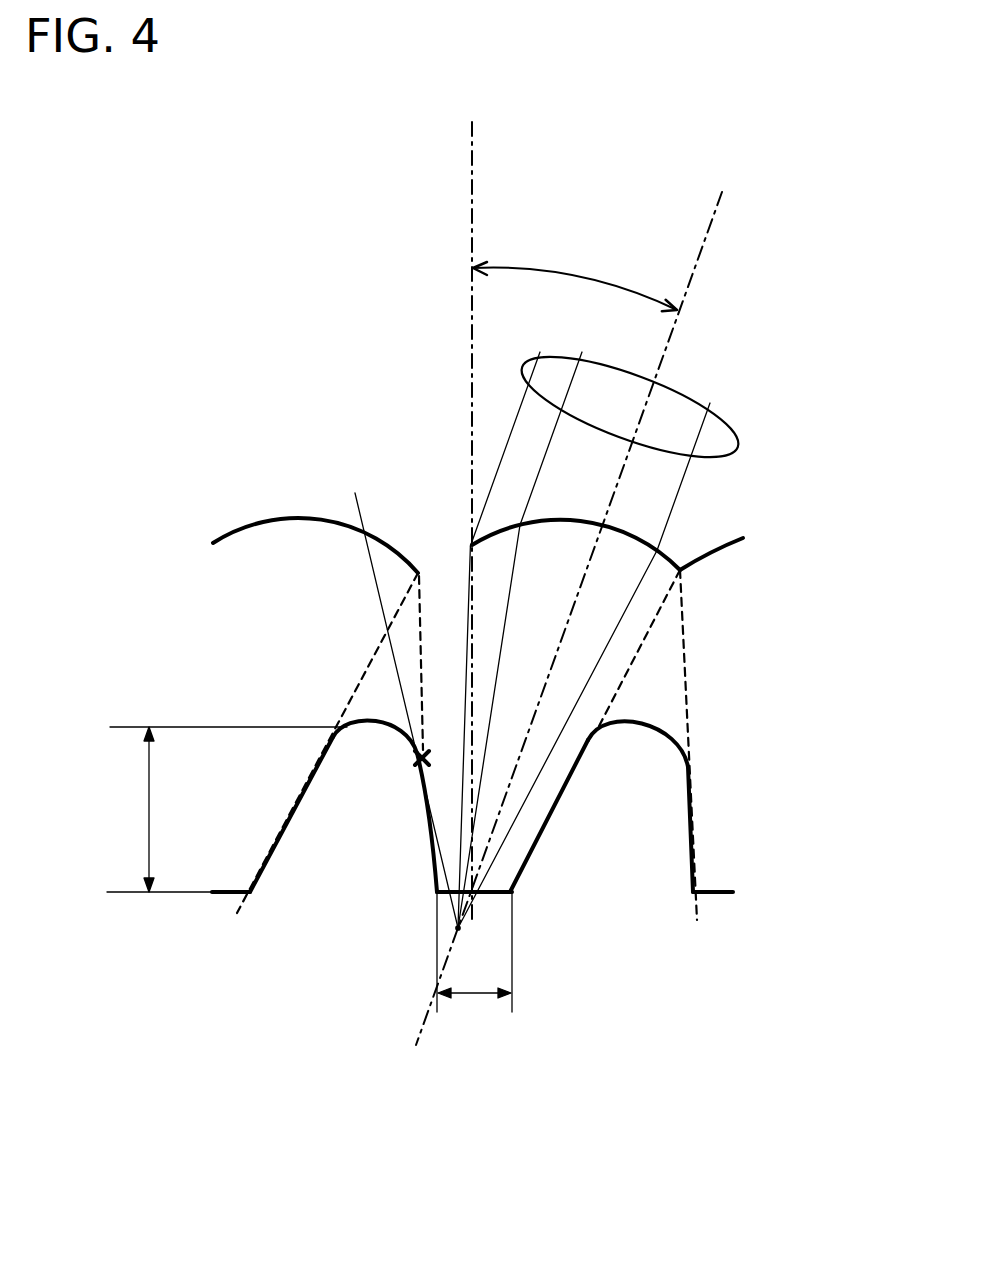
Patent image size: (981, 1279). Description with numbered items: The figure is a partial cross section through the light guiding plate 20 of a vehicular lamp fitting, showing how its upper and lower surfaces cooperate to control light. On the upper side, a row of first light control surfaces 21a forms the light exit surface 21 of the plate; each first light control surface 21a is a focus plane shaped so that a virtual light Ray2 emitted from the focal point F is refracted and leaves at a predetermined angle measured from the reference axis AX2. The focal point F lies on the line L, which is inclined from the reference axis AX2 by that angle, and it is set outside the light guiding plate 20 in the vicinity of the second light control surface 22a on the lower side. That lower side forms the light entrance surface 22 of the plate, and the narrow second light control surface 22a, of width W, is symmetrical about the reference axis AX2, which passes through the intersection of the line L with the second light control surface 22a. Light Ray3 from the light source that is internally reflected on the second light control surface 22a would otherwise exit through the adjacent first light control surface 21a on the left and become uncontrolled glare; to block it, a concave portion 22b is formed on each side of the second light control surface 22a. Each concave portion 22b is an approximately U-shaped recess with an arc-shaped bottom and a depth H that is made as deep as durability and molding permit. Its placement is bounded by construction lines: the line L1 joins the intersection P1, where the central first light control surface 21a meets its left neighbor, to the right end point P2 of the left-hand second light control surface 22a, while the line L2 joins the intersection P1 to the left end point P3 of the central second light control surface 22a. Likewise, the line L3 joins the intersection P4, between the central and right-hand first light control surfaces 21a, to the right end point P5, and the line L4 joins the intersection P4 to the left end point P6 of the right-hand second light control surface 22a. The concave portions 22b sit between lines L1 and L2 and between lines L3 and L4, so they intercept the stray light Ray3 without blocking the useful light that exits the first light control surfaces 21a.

The light guiding plate 20 is at (396, 346).
The light incident surface (upper surface of lens) 21 is at (342, 434).
The first light control surface 21a is at (283, 516).
The light exit surface (lower surface of lens) 22 is at (476, 1072).
The second light control surface 22a is at (213, 897).
The concave portion 22b is at (499, 822).
The reference axis AX2 is at (478, 168).
The line L is at (683, 311).
The light Ray 2 Ray2 is at (733, 426).
The light Ray 3 Ray3 is at (432, 848).
The focal point F is at (440, 953).
The intersection P1 is at (418, 570).
The right end point P2 is at (255, 896).
The left end point P3 is at (432, 896).
The intersection P4 is at (680, 568).
The right end point P5 is at (517, 897).
The left end point P6 is at (690, 897).
The line L1 is at (335, 718).
The line L2 is at (416, 735).
The line L3 is at (615, 686).
The line L4 is at (690, 700).
The depth H is at (228, 809).
The width W is at (474, 952).